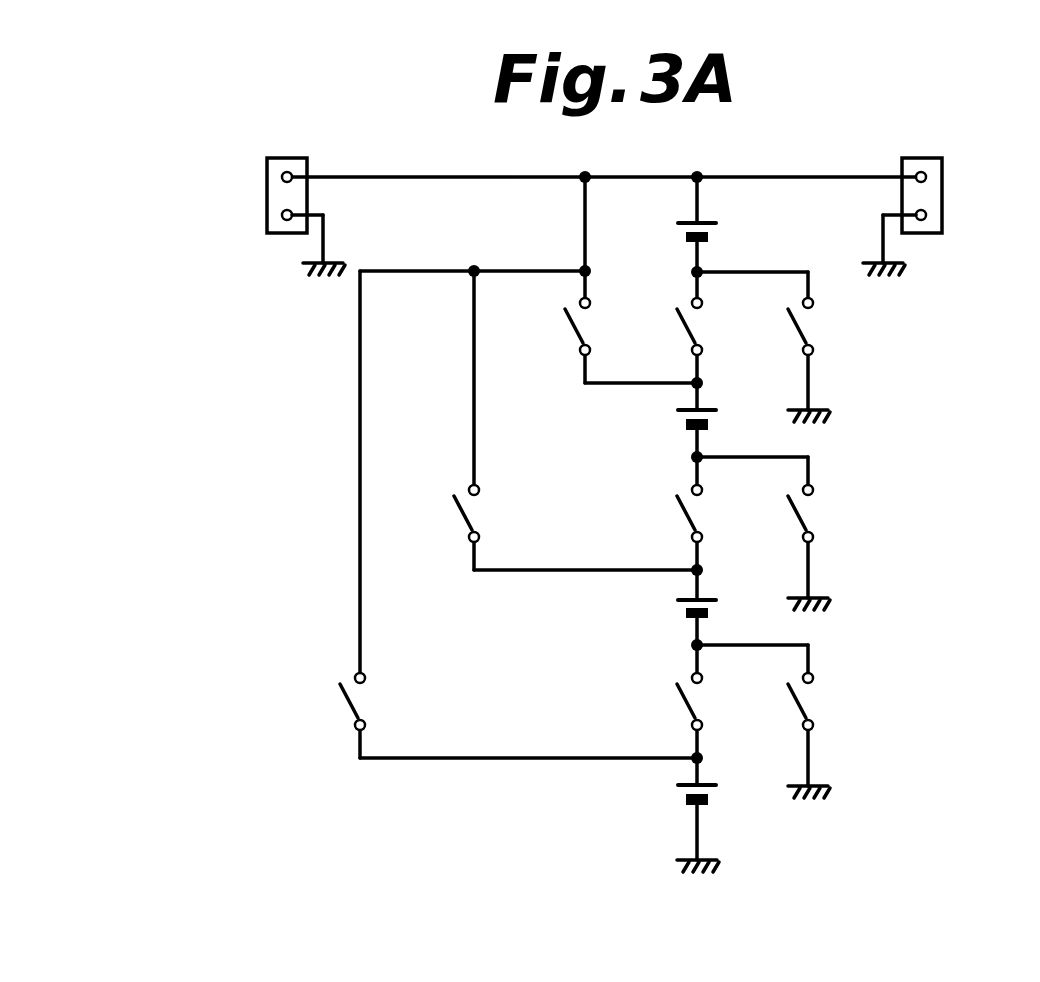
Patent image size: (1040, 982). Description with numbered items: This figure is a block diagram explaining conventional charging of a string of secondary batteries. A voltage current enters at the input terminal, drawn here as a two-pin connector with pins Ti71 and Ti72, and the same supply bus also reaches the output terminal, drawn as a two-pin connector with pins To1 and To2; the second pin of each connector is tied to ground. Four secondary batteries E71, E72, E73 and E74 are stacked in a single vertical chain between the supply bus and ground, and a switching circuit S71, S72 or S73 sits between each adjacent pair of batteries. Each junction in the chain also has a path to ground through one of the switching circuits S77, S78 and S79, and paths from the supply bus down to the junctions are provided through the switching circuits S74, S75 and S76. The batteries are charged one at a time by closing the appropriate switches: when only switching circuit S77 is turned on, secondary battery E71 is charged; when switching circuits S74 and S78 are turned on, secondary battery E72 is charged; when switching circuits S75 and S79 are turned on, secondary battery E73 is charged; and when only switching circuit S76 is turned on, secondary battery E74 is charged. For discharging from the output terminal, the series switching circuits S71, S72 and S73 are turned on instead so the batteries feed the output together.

The input terminal Ti71 is at (272, 178).
The input terminal Ti72 is at (272, 215).
The output terminal To1 is at (926, 175).
The output terminal To2 is at (926, 213).
The secondary battery E71 is at (715, 230).
The secondary battery E72 is at (680, 409).
The secondary battery E73 is at (680, 598).
The secondary battery E74 is at (680, 790).
The switching circuit S71 is at (676, 322).
The switching circuit S72 is at (676, 514).
The switching circuit S73 is at (676, 702).
The switching circuit S74 is at (566, 328).
The switching circuit S75 is at (477, 514).
The switching circuit S76 is at (364, 702).
The switching circuit S77 is at (812, 325).
The switching circuit S78 is at (812, 514).
The switching circuit S79 is at (812, 702).